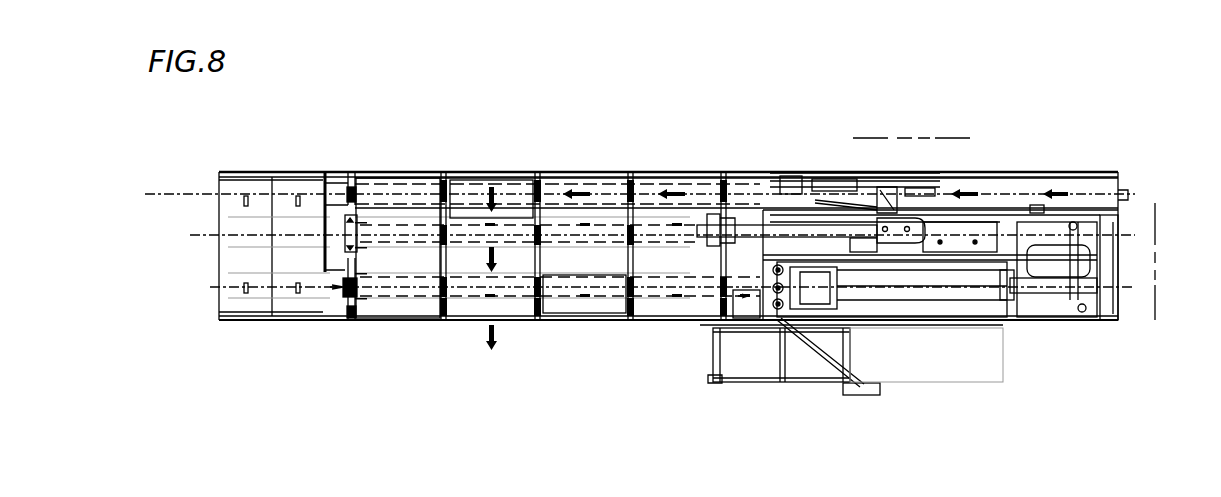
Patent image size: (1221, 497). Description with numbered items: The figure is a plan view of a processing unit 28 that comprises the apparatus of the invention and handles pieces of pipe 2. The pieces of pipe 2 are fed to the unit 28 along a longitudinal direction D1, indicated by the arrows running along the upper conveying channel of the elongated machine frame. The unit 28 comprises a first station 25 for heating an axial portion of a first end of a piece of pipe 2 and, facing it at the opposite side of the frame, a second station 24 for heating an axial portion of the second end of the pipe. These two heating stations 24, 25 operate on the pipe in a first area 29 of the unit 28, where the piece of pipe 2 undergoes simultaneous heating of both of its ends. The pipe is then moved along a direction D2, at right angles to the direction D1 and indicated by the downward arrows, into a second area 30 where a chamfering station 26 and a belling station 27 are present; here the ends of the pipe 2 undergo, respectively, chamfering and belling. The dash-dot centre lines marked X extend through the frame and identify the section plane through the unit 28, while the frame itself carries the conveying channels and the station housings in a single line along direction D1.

The piece of pipe 2 is at (432, 217).
The second station 24 is at (752, 213).
The first station 25 is at (345, 222).
The chamfering station 26 is at (335, 290).
The belling station 27 is at (742, 300).
The processing unit 28 is at (578, 146).
The first area 29 is at (513, 222).
The second area 30 is at (560, 300).
The longitudinal direction D1 is at (911, 123).
The direction D2 is at (1171, 261).
The section line X is at (170, 194).